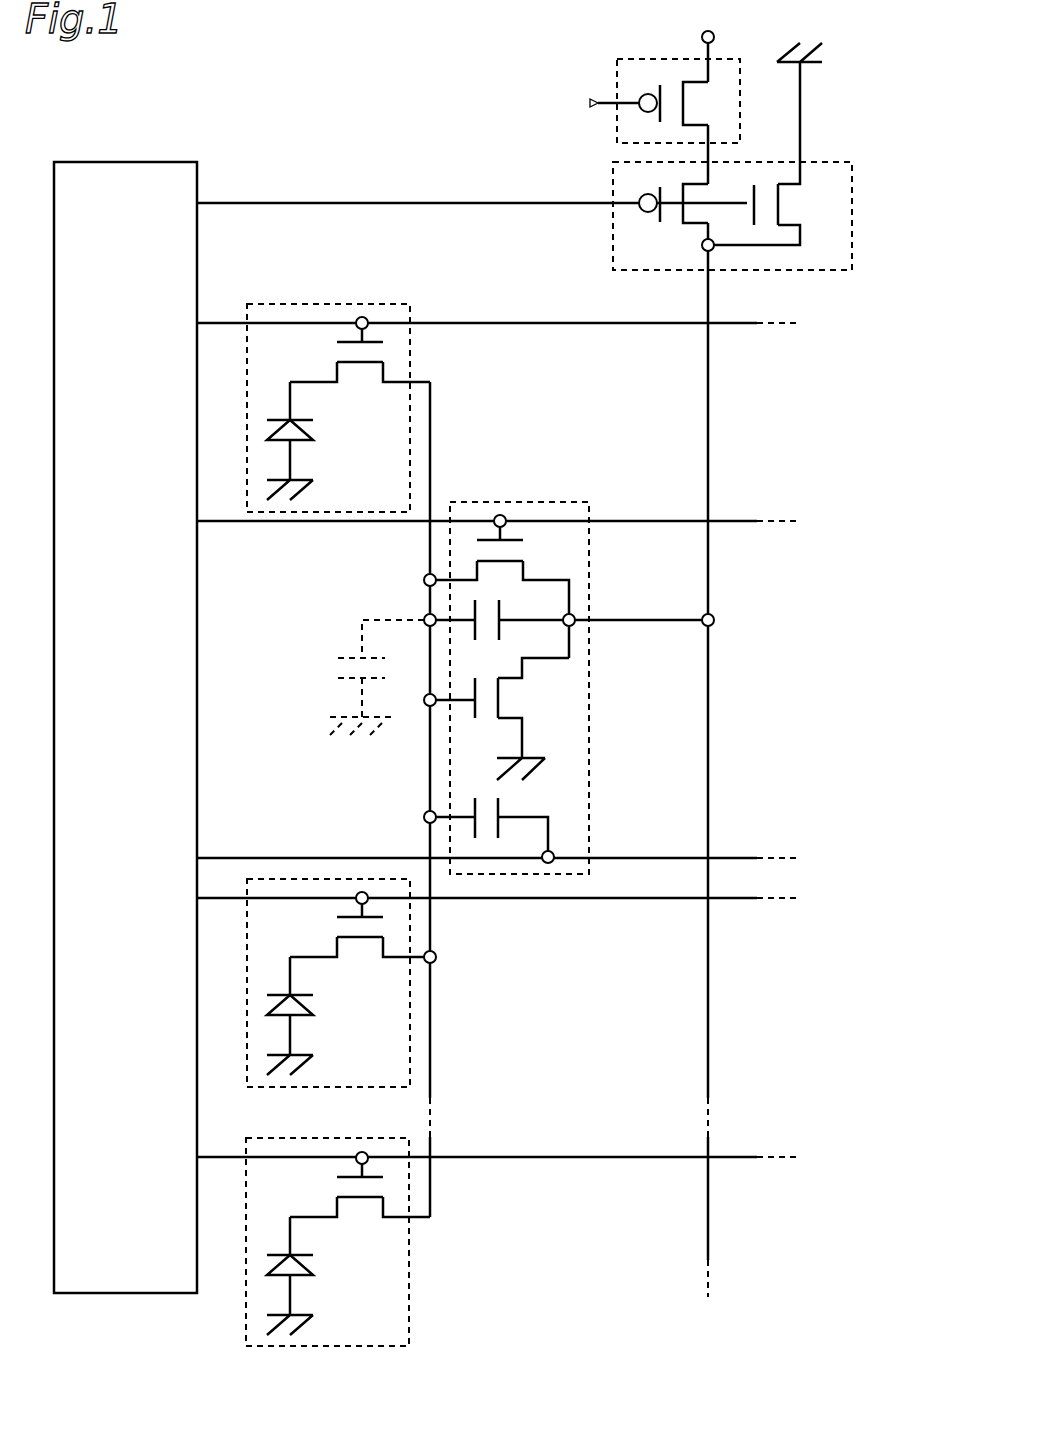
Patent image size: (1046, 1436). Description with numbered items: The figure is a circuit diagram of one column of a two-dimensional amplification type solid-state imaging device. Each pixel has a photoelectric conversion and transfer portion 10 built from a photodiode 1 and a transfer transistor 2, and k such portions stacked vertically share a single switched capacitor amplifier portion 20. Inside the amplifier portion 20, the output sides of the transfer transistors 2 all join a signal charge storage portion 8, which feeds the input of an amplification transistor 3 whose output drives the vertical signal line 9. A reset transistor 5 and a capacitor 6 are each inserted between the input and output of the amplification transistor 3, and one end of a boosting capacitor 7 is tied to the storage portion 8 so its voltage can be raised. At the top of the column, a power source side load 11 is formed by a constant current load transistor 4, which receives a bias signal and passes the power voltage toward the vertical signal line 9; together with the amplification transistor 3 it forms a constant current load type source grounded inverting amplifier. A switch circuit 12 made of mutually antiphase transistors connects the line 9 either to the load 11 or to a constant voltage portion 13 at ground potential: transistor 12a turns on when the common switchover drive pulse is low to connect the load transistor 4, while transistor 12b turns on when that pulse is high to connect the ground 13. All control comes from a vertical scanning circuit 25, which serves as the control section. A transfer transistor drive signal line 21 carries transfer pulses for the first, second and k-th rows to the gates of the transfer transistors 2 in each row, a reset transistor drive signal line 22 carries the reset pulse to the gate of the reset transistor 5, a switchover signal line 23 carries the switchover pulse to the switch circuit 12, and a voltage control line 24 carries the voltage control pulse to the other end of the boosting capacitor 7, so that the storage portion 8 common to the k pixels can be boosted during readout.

The photodiode 1 is at (320, 858).
The transfer transistor 2 is at (360, 790).
The amplification transistor 3 is at (497, 719).
The constant current load transistor 4 is at (624, 114).
The reset transistor 5 is at (499, 586).
The capacitor 6 is at (569, 617).
The boosting capacitor 7 is at (489, 799).
The signal charge storage portion 8 is at (358, 799).
The vertical signal line 9 is at (733, 670).
The photoelectric conversion and transfer portion 10 is at (374, 825).
The power source side load 11 is at (711, 102).
The switch circuit 12 is at (734, 240).
The transistor 12a is at (673, 227).
The transistor 12b is at (781, 164).
The constant voltage portion 13 is at (830, 79).
The switched capacitor amplifier portion 20 is at (529, 659).
The transfer transistor drive signal line 21 is at (447, 768).
The reset transistor drive signal line 22 is at (456, 556).
The switchover signal line 23 is at (442, 236).
The voltage control line 24 is at (456, 827).
The vertical scanning circuit 25 is at (125, 760).